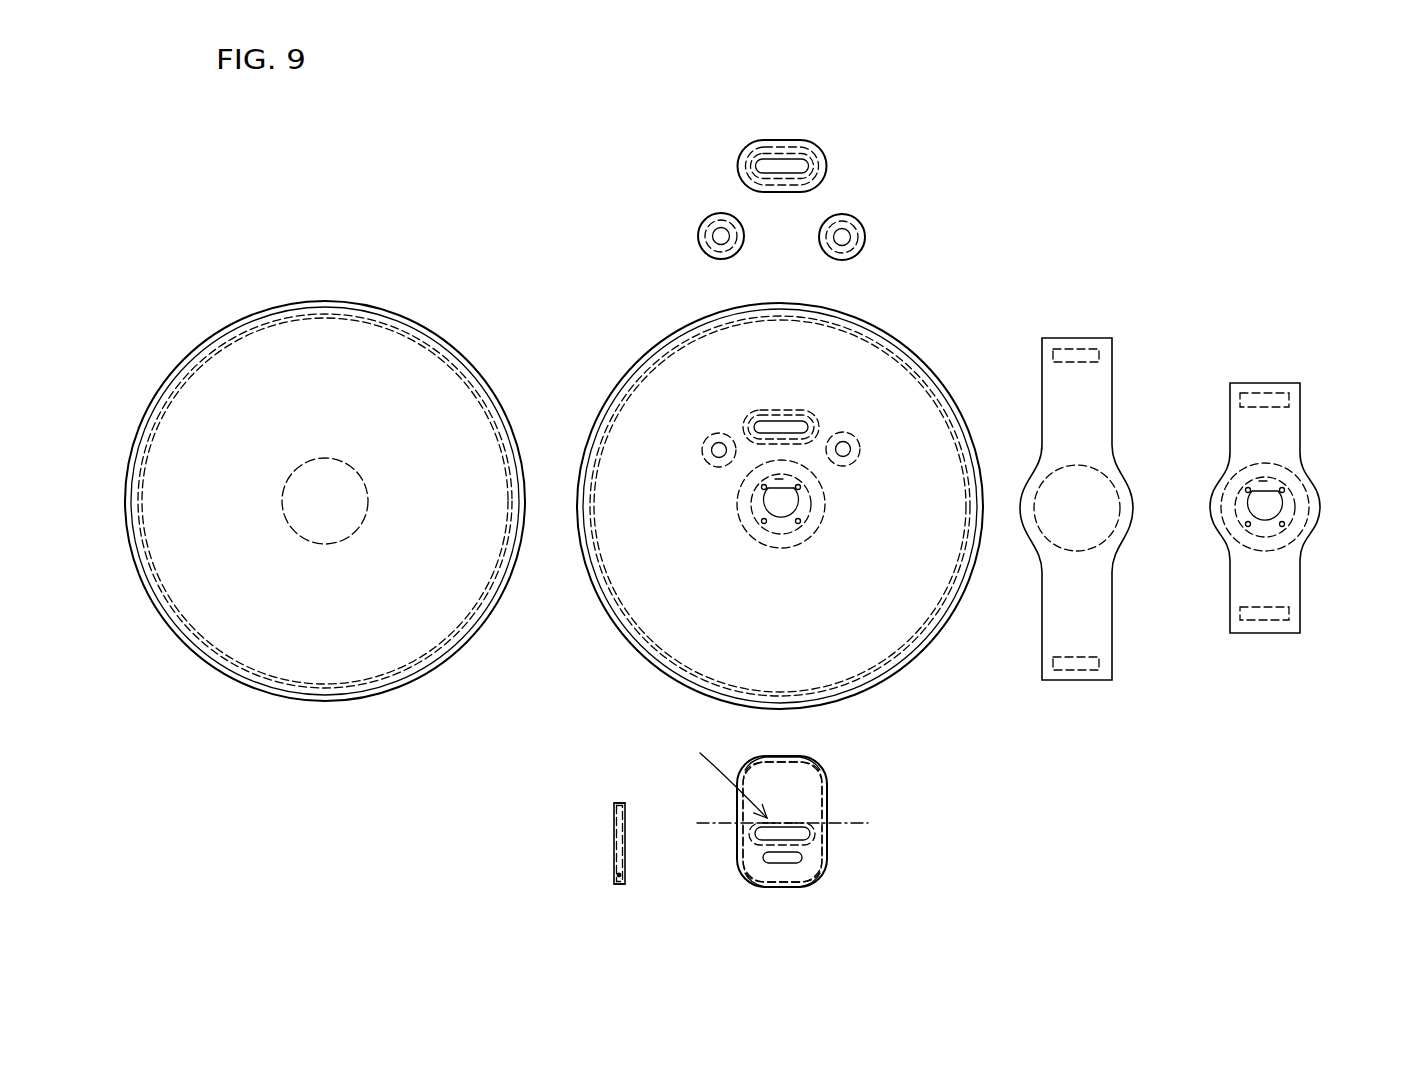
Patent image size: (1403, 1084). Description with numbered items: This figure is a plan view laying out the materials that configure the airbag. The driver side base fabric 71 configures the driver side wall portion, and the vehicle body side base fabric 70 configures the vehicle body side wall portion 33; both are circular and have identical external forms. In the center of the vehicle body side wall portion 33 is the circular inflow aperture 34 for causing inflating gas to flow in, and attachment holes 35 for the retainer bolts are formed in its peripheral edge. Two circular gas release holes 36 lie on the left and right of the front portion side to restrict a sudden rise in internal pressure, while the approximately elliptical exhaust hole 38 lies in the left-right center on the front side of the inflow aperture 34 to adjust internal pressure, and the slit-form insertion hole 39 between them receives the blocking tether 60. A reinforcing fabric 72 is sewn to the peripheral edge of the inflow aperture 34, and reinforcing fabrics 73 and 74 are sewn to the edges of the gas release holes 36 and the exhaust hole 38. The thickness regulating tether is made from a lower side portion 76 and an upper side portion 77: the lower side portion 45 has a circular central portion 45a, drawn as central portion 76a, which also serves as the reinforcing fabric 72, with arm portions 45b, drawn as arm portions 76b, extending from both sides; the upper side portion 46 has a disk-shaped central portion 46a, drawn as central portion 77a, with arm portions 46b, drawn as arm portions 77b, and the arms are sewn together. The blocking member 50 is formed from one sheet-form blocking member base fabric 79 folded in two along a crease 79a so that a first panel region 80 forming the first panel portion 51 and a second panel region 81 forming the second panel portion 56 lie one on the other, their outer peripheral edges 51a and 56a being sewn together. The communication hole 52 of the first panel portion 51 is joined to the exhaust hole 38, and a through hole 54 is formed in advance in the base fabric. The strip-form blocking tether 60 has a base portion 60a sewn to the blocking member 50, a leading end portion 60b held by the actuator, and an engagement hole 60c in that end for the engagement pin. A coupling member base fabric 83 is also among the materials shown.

The vehicle body side wall portion 33 is at (739, 433).
The driver side base fabric 71 is at (332, 293).
The vehicle body side base fabric 70 is at (565, 335).
The gas release hole 36 is at (717, 437).
The exhaust hole 38 is at (787, 428).
The insertion hole 39 is at (775, 478).
The inflow aperture 34 is at (773, 503).
The attachment hole 35 is at (762, 523).
The reinforcing fabric 72 is at (817, 512).
The reinforcing fabric 73 is at (709, 216).
The reinforcing fabric 74 is at (826, 155).
The lower side portion 45 is at (1125, 477).
The lower side portion 76 is at (1077, 295).
The central portion 45a is at (1131, 470).
The central portion 76a is at (1113, 510).
The arm portion 45b is at (1142, 520).
The arm portion 76b is at (1117, 373).
The upper side portion 46 is at (1265, 480).
The upper side portion 77 is at (1252, 360).
The central portion 46a is at (1299, 446).
The central portion 77a is at (1288, 482).
The arm portion 46b is at (1221, 566).
The arm portion 77b is at (1245, 585).
The blocking member 50 is at (872, 827).
The blocking member base fabric 79 is at (995, 763).
The crease 79a is at (711, 775).
The second panel portion 56 is at (862, 791).
The second panel region 81 is at (803, 793).
The outer peripheral edge 56a is at (807, 757).
The first panel portion 51 is at (862, 854).
The first panel region 80 is at (808, 858).
The outer peripheral edge 51a is at (817, 875).
The communication hole 52 is at (762, 835).
The through hole 54 is at (767, 857).
The blocking tether 60 is at (516, 831).
The coupling member base fabric 83 is at (597, 837).
The base portion 60a is at (616, 795).
The leading end portion 60b is at (620, 895).
The engagement hole 60c is at (618, 874).